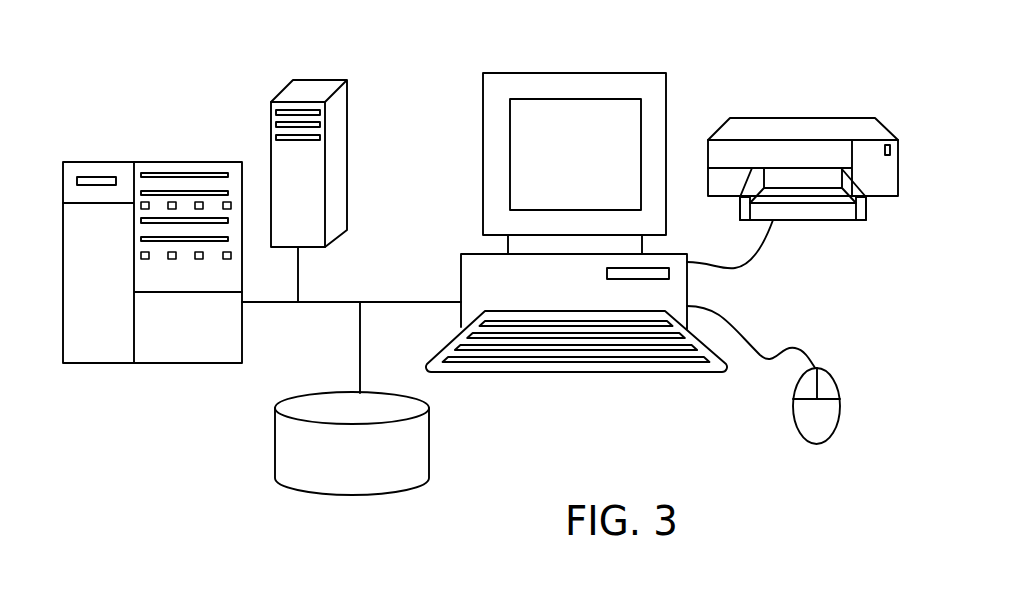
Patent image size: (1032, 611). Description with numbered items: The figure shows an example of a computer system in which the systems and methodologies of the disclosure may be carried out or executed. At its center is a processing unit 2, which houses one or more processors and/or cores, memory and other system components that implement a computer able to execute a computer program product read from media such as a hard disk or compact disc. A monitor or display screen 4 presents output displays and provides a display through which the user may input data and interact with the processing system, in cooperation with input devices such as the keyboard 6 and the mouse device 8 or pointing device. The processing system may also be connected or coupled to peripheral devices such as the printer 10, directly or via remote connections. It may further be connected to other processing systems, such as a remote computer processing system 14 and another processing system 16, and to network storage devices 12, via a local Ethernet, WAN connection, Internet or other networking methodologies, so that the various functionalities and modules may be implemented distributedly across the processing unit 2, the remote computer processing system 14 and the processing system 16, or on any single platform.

The processing unit 2 is at (471, 277).
The monitor or display screen 4 is at (590, 73).
The keyboard 6 is at (618, 372).
The mouse device 8 is at (840, 416).
The printer 10 is at (808, 118).
The network storage devices 12 is at (275, 447).
The remote computer processing system 14 is at (347, 140).
The processing system 16 is at (203, 162).